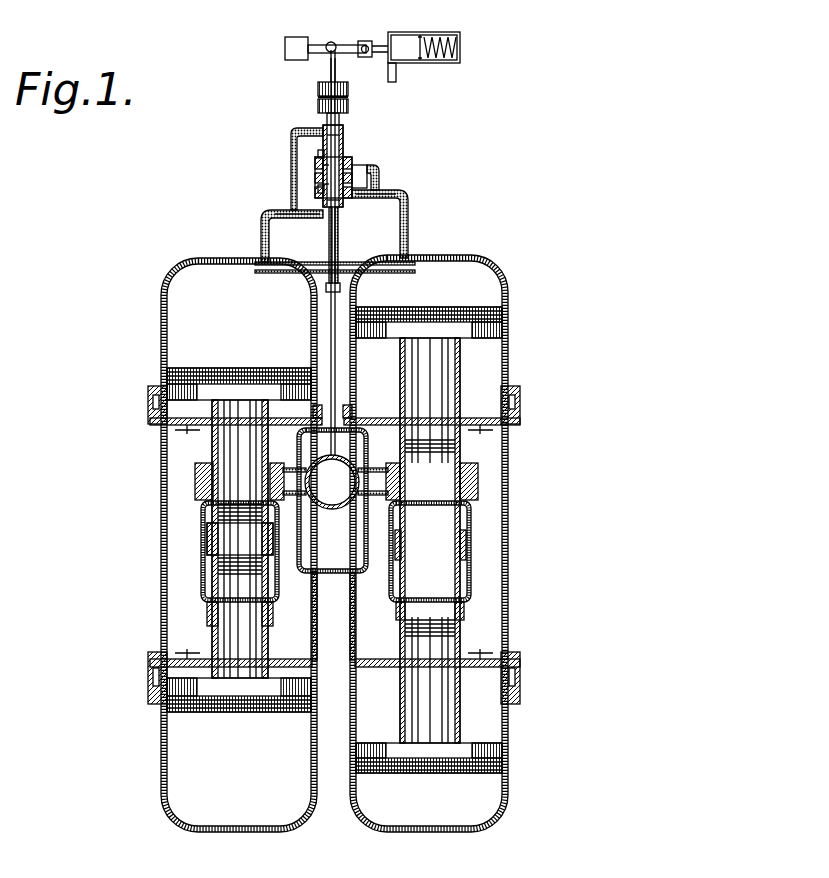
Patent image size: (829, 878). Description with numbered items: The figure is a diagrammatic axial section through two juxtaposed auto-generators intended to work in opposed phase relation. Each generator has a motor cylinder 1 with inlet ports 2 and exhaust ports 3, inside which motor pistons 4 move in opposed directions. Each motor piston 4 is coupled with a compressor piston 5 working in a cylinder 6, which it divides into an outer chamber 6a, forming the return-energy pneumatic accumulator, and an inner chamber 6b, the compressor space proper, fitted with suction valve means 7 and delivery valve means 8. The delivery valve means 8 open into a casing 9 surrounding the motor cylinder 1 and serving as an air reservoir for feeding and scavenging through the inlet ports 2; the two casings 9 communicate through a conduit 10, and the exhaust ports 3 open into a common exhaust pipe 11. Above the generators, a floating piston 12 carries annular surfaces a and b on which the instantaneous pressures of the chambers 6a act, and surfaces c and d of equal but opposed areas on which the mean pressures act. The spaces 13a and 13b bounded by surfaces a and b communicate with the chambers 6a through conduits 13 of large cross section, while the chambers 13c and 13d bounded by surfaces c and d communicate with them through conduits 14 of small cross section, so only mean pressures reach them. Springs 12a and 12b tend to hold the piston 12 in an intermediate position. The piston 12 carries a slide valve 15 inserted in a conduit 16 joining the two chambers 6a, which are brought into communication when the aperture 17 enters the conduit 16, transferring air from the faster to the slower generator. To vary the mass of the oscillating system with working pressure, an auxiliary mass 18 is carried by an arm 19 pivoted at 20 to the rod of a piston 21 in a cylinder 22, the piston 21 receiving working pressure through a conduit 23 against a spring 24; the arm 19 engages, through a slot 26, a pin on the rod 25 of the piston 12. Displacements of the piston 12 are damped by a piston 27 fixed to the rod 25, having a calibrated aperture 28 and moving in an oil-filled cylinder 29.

The motor cylinder 1 is at (205, 542).
The inlet ports 2 is at (210, 610).
The exhaust ports 3 is at (200, 478).
The motor piston 4 is at (236, 452).
The compressor piston 5 is at (172, 377).
The cylinder 6 is at (161, 325).
The outer chamber 6a is at (200, 271).
The inner chamber 6b is at (185, 386).
The suction valve means 7 is at (150, 405).
The delivery valve means 8 is at (175, 429).
The casing 9 is at (203, 500).
The conduit 10 is at (333, 573).
The common exhaust pipe 11 is at (333, 463).
The floating piston 12 is at (345, 150).
The spring 12a is at (318, 191).
The spring 12b is at (318, 155).
The conduits 13 is at (261, 215).
The space 13a is at (324, 218).
The space 13b is at (400, 193).
The chamber 13c is at (355, 178).
The chamber 13d is at (325, 126).
The conduits 14 is at (291, 160).
The slide valve 15 is at (339, 244).
The conduit 16 is at (364, 271).
The aperture 17 is at (332, 291).
The auxiliary mass 18 is at (285, 42).
The arm 19 is at (359, 45).
The pivot 20 is at (368, 45).
The piston 21 is at (425, 50).
The cylinder 22 is at (438, 60).
The conduit 23 is at (396, 75).
The spring 24 is at (458, 40).
The rod 25 is at (330, 62).
The slot 26 is at (330, 42).
The piston 27 is at (348, 102).
The calibrated aperture 28 is at (324, 85).
The cylinder 29 is at (325, 97).
The annular surface a is at (340, 208).
The annular surface b is at (320, 185).
The annular surface c is at (320, 165).
The annular surface d is at (343, 136).